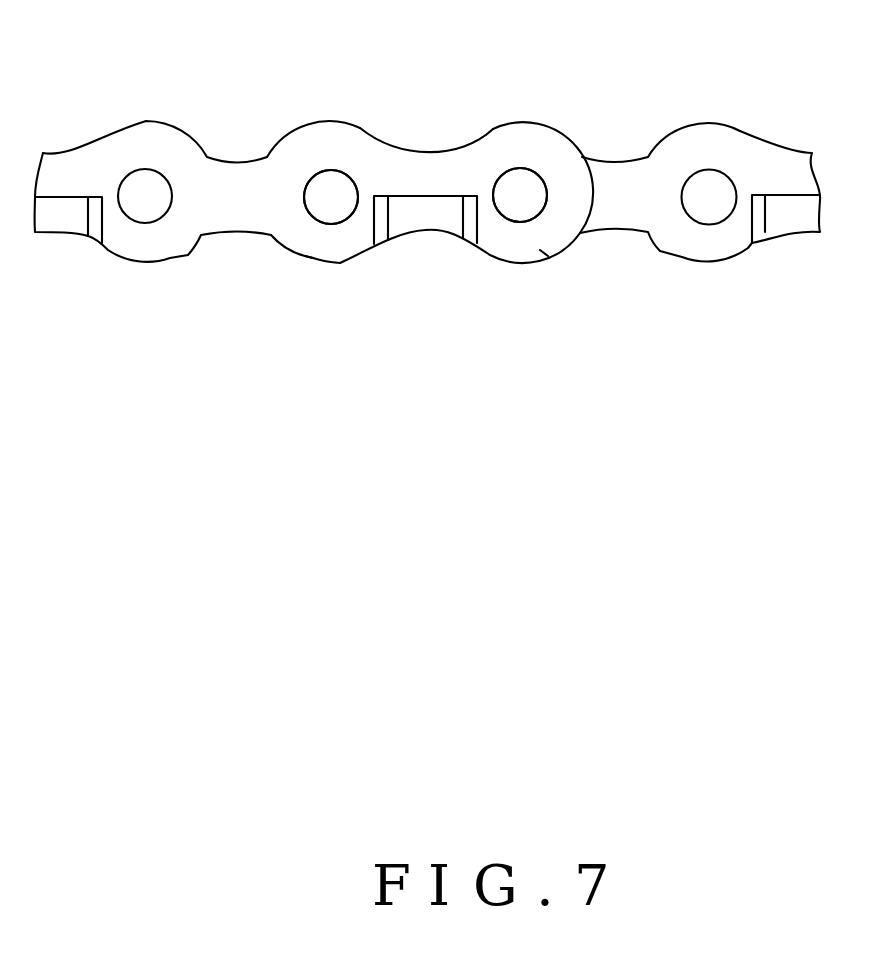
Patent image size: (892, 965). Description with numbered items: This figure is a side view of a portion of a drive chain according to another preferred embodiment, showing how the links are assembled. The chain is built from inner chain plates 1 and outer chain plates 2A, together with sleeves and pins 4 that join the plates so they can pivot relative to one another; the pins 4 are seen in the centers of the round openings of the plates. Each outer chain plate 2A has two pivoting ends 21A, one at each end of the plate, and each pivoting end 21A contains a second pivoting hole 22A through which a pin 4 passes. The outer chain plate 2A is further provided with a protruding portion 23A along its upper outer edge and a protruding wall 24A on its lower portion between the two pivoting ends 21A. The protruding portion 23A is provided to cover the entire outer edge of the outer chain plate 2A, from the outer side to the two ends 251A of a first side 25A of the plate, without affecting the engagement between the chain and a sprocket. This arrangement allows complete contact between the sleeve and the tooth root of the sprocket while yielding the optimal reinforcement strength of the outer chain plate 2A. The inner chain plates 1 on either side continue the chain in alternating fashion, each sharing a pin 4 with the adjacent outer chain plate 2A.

The inner chain plate 1 is at (243, 172).
The outer chain plate 2A is at (434, 211).
The pin 4 is at (339, 190).
The pivoting end 21A is at (334, 242).
The second pivoting hole 22A is at (313, 218).
The protruding portion 23A is at (521, 127).
The protruding wall 24A is at (430, 218).
The first side 25A is at (367, 245).
The end of first side 251A is at (306, 260).